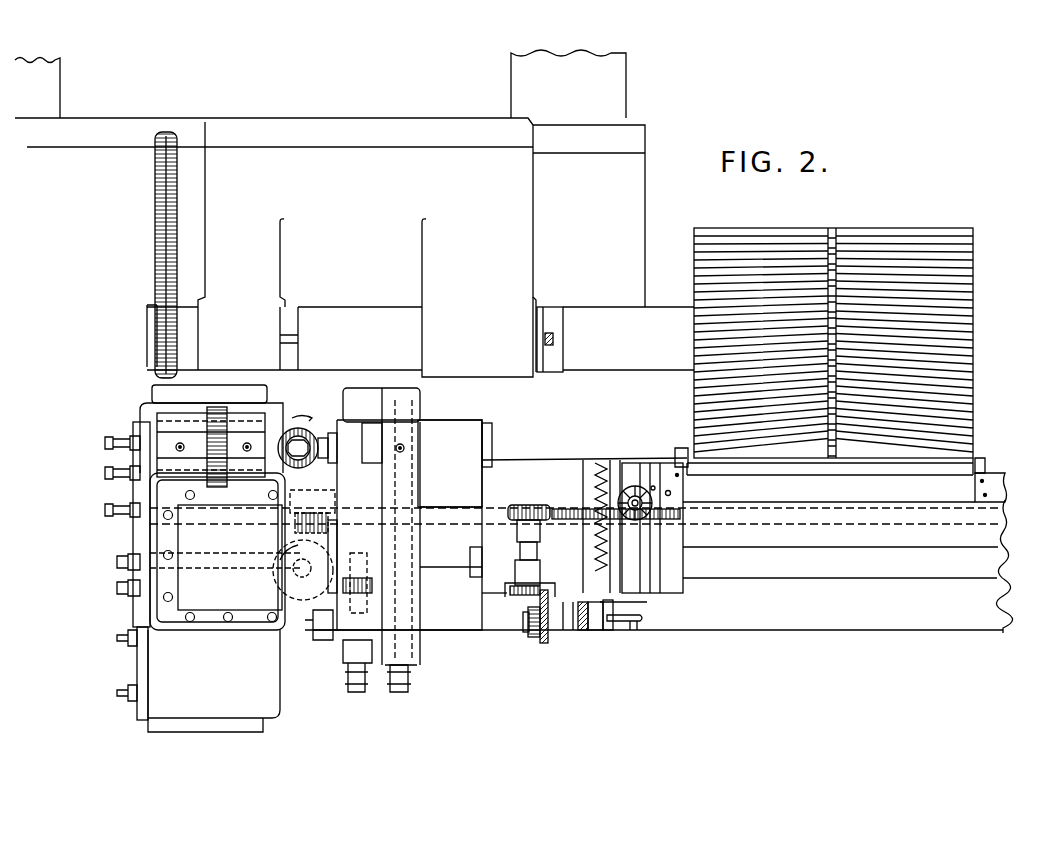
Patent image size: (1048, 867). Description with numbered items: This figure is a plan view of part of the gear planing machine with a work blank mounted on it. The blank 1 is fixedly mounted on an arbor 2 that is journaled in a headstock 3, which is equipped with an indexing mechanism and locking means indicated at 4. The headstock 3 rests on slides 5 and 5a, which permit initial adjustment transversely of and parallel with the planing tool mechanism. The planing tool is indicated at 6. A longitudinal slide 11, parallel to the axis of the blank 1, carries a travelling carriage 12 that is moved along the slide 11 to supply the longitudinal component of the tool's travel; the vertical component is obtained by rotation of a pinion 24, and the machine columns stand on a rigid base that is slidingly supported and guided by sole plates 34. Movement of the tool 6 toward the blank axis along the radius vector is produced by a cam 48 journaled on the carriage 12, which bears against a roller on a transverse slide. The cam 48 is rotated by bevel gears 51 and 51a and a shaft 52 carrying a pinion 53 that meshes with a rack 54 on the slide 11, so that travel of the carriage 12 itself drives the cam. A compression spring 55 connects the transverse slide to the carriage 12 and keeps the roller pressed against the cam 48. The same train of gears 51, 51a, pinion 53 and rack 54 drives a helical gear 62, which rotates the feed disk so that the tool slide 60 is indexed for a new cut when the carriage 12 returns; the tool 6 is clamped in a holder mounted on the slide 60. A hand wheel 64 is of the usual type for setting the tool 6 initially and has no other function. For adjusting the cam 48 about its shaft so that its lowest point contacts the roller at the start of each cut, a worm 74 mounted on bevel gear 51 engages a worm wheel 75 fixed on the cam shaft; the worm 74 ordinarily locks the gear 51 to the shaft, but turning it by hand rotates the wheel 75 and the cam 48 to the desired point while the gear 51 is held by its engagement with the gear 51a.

The blank 1 is at (888, 228).
The arbor 2 is at (652, 311).
The headstock 3 is at (422, 258).
The indexing mechanism and locking means 4 is at (154, 240).
The slide 5 is at (62, 92).
The slide 5a is at (589, 248).
The planing tool 6 is at (682, 447).
The longitudinal slide 11 is at (843, 578).
The travelling carriage 12 is at (491, 597).
The pinion 24 is at (297, 525).
The sole plate 34 is at (197, 730).
The cam 48 is at (608, 630).
The bevel gear 51 is at (546, 645).
The bevel gear 51a is at (512, 600).
The shaft 52 is at (520, 553).
The pinion 53 is at (522, 505).
The rack 54 is at (575, 509).
The compression spring 55 is at (598, 475).
The tool slide 60 is at (630, 486).
The helical gear 62 is at (675, 463).
The hand wheel 64 is at (640, 617).
The worm 74 is at (535, 637).
The worm wheel 75 is at (526, 625).